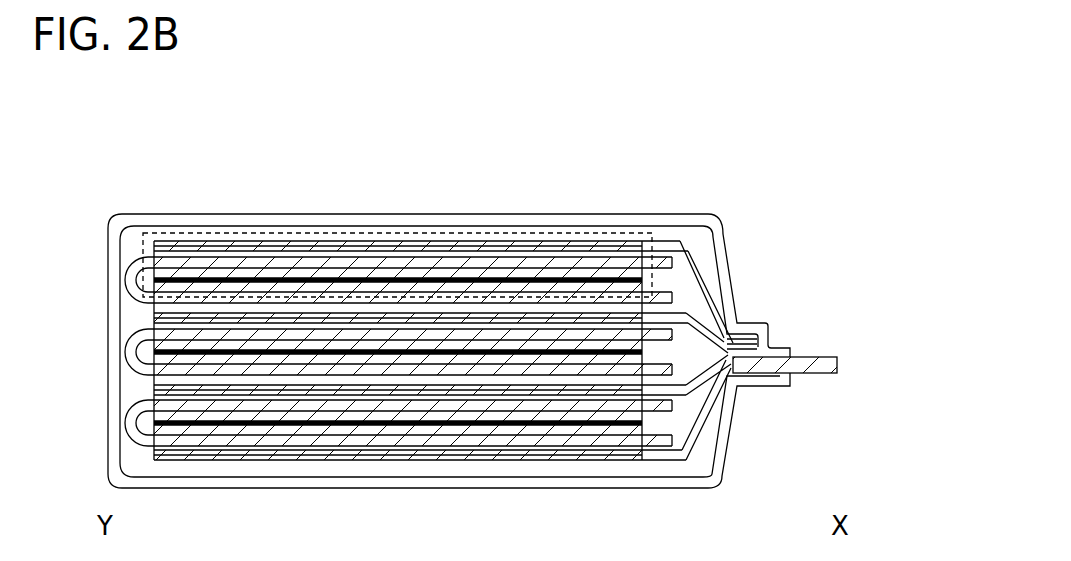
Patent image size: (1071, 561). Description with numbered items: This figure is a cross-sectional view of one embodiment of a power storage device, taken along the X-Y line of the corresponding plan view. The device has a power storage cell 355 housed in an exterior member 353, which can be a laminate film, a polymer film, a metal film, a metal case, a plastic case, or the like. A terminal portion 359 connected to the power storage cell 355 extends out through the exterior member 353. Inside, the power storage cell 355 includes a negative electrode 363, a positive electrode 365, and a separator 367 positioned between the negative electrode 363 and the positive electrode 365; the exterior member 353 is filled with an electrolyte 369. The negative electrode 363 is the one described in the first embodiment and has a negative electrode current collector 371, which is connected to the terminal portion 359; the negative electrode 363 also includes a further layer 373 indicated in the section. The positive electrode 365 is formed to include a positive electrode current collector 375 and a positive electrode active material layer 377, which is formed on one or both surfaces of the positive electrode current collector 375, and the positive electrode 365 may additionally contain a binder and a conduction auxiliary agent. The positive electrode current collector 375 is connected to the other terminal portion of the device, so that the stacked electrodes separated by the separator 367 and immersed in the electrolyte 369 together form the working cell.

The exterior member 353 is at (723, 272).
The power storage cell 355 is at (184, 214).
The terminal portion 359 is at (837, 363).
The negative electrode 363 is at (421, 270).
The positive electrode 365 is at (398, 257).
The separator 367 is at (378, 257).
The electrolyte 369 is at (682, 278).
The negative electrode current collector 371 is at (262, 247).
The positive electrode active material layer 373 is at (222, 145).
The positive electrode current collector 375 is at (538, 281).
The positive electrode active material layer 377 is at (472, 275).